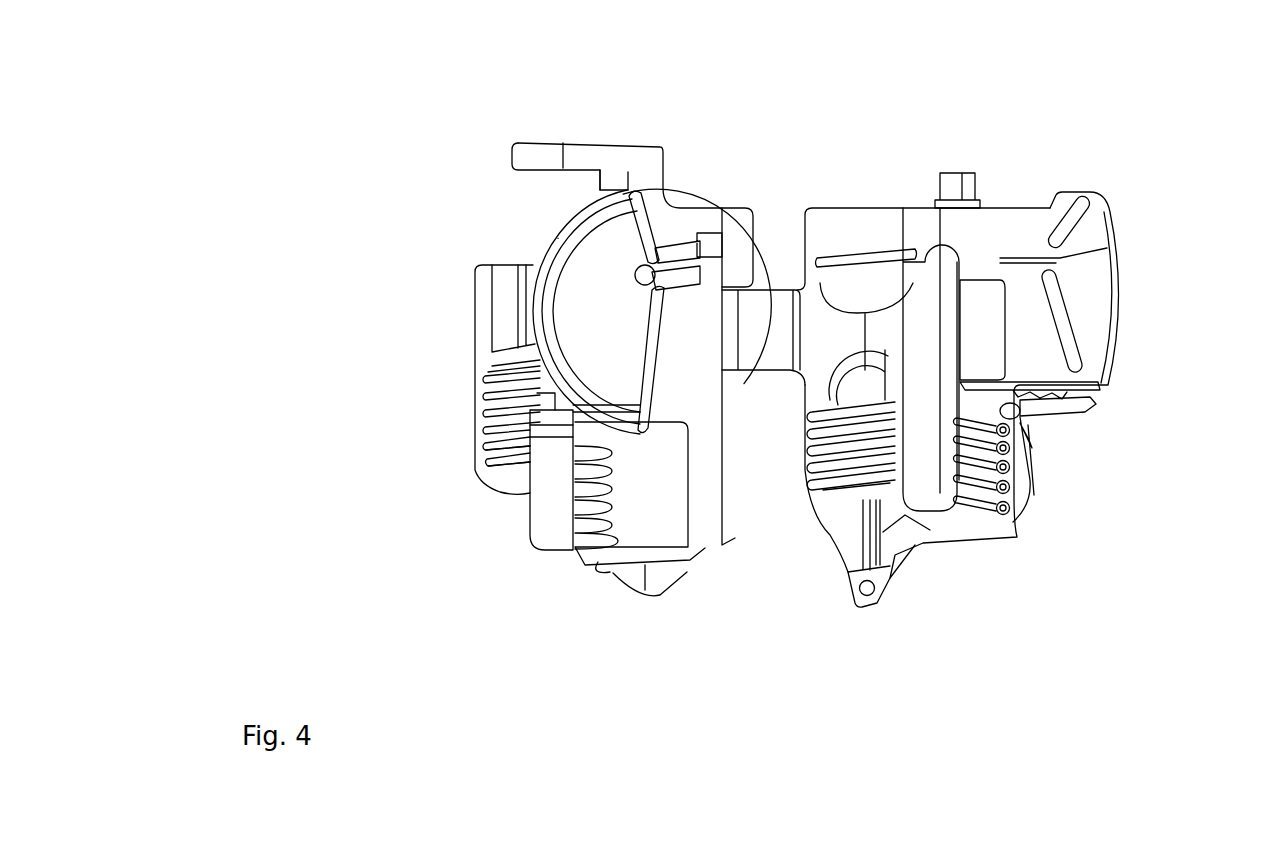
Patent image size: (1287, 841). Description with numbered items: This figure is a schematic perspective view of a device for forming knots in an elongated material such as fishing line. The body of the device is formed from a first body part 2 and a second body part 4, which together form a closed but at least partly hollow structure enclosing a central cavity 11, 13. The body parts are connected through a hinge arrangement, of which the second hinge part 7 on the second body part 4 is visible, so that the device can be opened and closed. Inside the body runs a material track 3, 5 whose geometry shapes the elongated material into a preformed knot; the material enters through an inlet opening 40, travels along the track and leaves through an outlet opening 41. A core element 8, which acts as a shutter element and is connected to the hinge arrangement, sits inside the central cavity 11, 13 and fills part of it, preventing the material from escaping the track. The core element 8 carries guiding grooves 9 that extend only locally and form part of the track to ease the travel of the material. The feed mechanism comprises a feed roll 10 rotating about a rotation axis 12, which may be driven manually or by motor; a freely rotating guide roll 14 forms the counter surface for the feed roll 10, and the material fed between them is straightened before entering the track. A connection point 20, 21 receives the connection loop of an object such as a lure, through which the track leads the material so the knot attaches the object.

The first body part 2 is at (1060, 203).
The material track 3 is at (1005, 485).
The second body part 4 is at (480, 289).
The material track 5 is at (470, 378).
The second hinge part 7 is at (735, 220).
The core element 8 is at (538, 521).
The guiding grooves 9 is at (590, 538).
The feed roll 10 is at (928, 273).
The central cavity 11 is at (918, 517).
The rotation axis 12 is at (958, 188).
The central cavity 13 is at (514, 472).
The guide roll 14 is at (706, 523).
The connection point 20 is at (876, 595).
The connection point 21 is at (641, 583).
The inlet opening 40 is at (1058, 258).
The outlet opening 41 is at (488, 378).